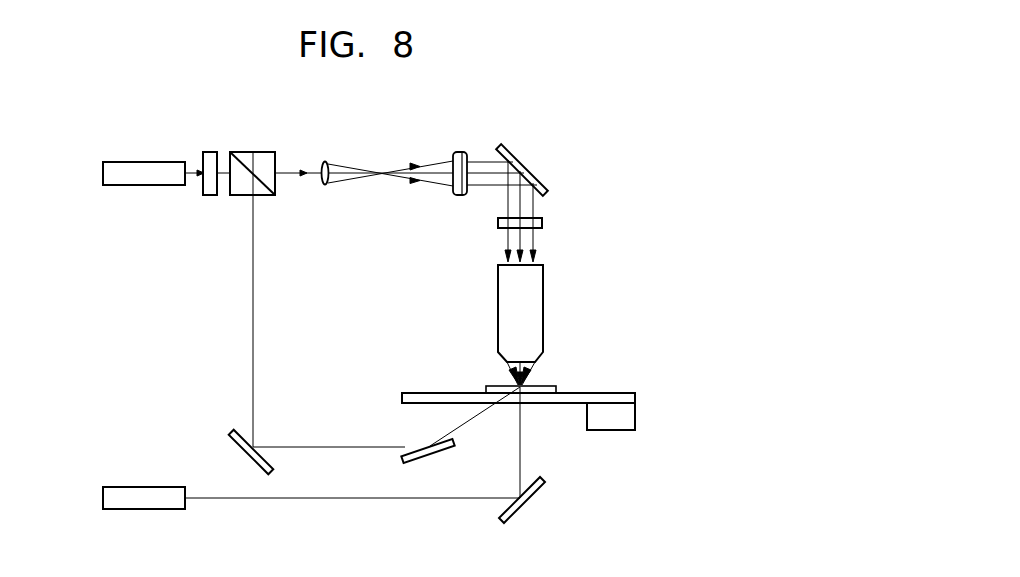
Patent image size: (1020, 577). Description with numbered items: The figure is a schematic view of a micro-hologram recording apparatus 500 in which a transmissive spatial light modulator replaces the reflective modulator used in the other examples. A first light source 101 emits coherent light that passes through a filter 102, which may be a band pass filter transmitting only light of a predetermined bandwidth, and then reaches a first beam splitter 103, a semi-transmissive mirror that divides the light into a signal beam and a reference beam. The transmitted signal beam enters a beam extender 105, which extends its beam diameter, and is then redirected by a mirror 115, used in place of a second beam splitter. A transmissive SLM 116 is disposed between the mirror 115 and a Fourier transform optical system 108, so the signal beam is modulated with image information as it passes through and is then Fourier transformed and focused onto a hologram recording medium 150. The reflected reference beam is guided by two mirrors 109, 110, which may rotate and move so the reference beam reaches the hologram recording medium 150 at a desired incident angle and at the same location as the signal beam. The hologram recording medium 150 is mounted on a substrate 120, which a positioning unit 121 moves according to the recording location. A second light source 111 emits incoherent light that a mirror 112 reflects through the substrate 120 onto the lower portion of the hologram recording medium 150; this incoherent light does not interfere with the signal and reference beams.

The micro-hologram recording apparatus 500 is at (160, 312).
The first light source 101 is at (142, 168).
The filter 102 is at (207, 157).
The first beam splitter 103 is at (253, 157).
The beam extender 105 is at (465, 142).
The mirror 115 is at (523, 170).
The transmissive SLM 116 is at (542, 224).
The Fourier transform optical system 108 is at (540, 308).
The hologram recording medium 150 is at (556, 387).
The substrate 120 is at (635, 397).
The positioning unit 121 is at (635, 421).
The mirror 109 is at (238, 450).
The mirror 110 is at (429, 455).
The second light source 111 is at (143, 492).
The mirror 112 is at (527, 505).